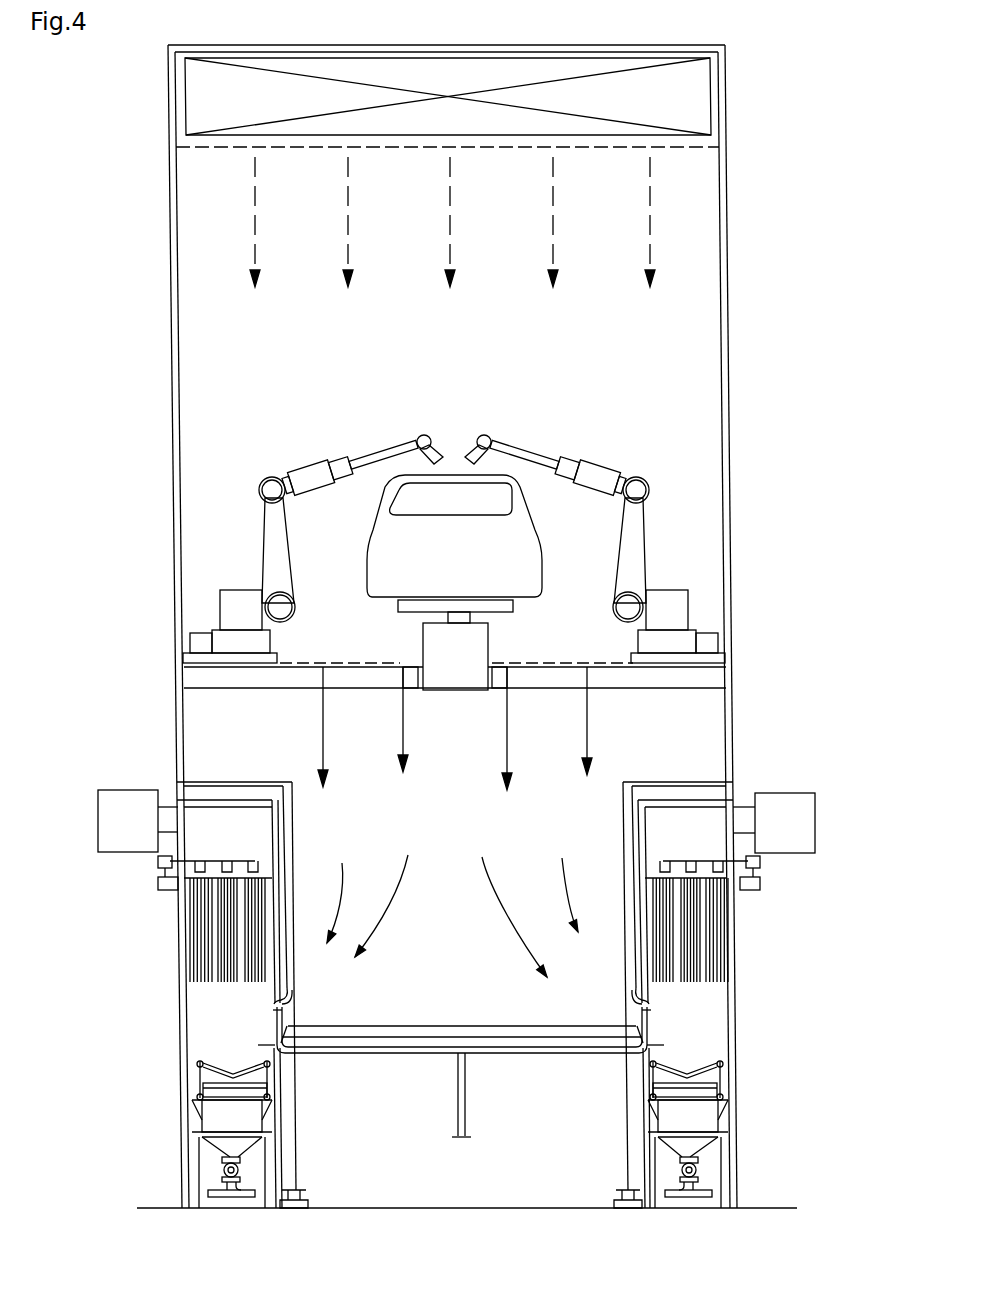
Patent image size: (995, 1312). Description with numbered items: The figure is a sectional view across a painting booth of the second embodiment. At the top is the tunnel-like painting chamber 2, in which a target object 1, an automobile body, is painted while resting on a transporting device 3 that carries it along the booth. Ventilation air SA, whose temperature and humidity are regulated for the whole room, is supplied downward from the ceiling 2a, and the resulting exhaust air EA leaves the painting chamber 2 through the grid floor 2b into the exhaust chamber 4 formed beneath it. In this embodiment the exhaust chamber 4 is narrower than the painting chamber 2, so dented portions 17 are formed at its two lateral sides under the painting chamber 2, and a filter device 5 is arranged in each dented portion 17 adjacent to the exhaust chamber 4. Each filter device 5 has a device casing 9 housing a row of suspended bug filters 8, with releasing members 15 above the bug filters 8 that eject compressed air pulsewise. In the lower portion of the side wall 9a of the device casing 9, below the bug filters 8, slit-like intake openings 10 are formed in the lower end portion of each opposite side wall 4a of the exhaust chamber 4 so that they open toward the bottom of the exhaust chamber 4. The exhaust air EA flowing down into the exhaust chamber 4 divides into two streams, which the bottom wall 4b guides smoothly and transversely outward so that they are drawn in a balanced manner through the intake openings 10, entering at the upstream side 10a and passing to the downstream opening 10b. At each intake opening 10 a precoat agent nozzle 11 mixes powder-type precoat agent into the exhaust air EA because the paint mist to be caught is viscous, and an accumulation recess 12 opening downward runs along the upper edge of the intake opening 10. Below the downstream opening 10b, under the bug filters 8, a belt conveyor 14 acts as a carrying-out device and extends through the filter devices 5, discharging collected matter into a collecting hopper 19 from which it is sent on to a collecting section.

The target object 1 is at (522, 545).
The painting chamber 2 is at (459, 365).
The ceiling 2a is at (577, 149).
The grid floor 2b is at (372, 662).
The transporting device 3 is at (480, 644).
The exhaust chamber 4 is at (463, 840).
The side wall of the exhaust chamber 4a is at (293, 868).
The bottom wall of the exhaust chamber 4b is at (497, 1026).
The filter device 5 is at (80, 778).
The bug filters 8 is at (225, 953).
The device casing 9 is at (180, 972).
The side wall of the device casing 9a is at (278, 928).
The intake openings 10 is at (449, 1054).
The intake opening (upstream side) 10a is at (300, 1008).
The downstream opening of the intake opening 10b is at (237, 1037).
The precoat agent nozzle 11 is at (272, 1012).
The accumulation recess 12 is at (288, 997).
The belt conveyor 14 is at (258, 1073).
The releasing members 15 is at (203, 861).
The dented portions 17 is at (272, 794).
The collecting hopper 19 is at (210, 1118).
The ventilation air SA is at (348, 212).
The exhaust air EA is at (403, 710).